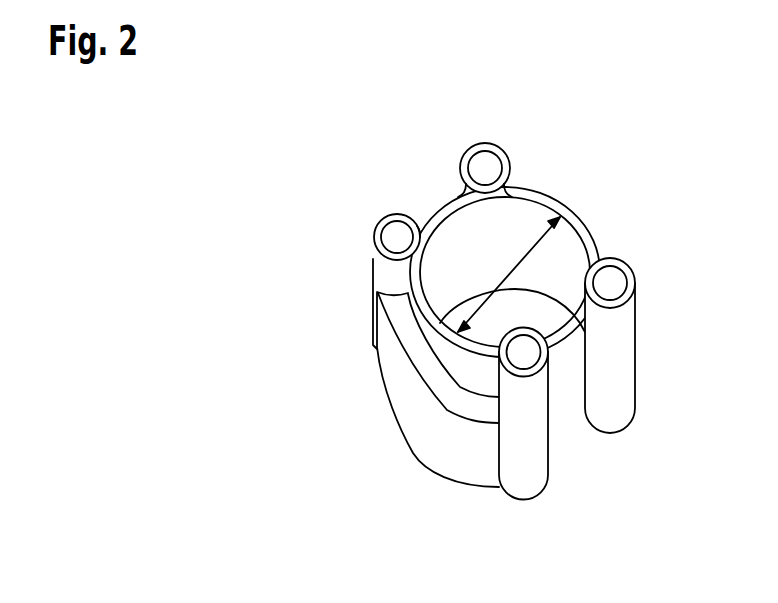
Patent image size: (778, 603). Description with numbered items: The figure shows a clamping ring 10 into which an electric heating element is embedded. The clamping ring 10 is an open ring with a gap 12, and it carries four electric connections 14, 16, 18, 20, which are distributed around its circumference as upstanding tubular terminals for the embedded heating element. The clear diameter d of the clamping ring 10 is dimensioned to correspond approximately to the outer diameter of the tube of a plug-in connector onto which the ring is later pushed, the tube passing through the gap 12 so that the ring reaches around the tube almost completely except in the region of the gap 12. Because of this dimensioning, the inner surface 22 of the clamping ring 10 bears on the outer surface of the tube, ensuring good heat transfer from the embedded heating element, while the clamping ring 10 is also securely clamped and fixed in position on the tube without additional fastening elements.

The clamping ring 10 is at (442, 320).
The gap 12 is at (572, 420).
The electric connection 14 is at (523, 357).
The electric connection 16 is at (388, 243).
The electric connection 18 is at (487, 168).
The electric connection 20 is at (613, 283).
The inner surface 22 is at (455, 246).
The clear diameter d is at (507, 277).